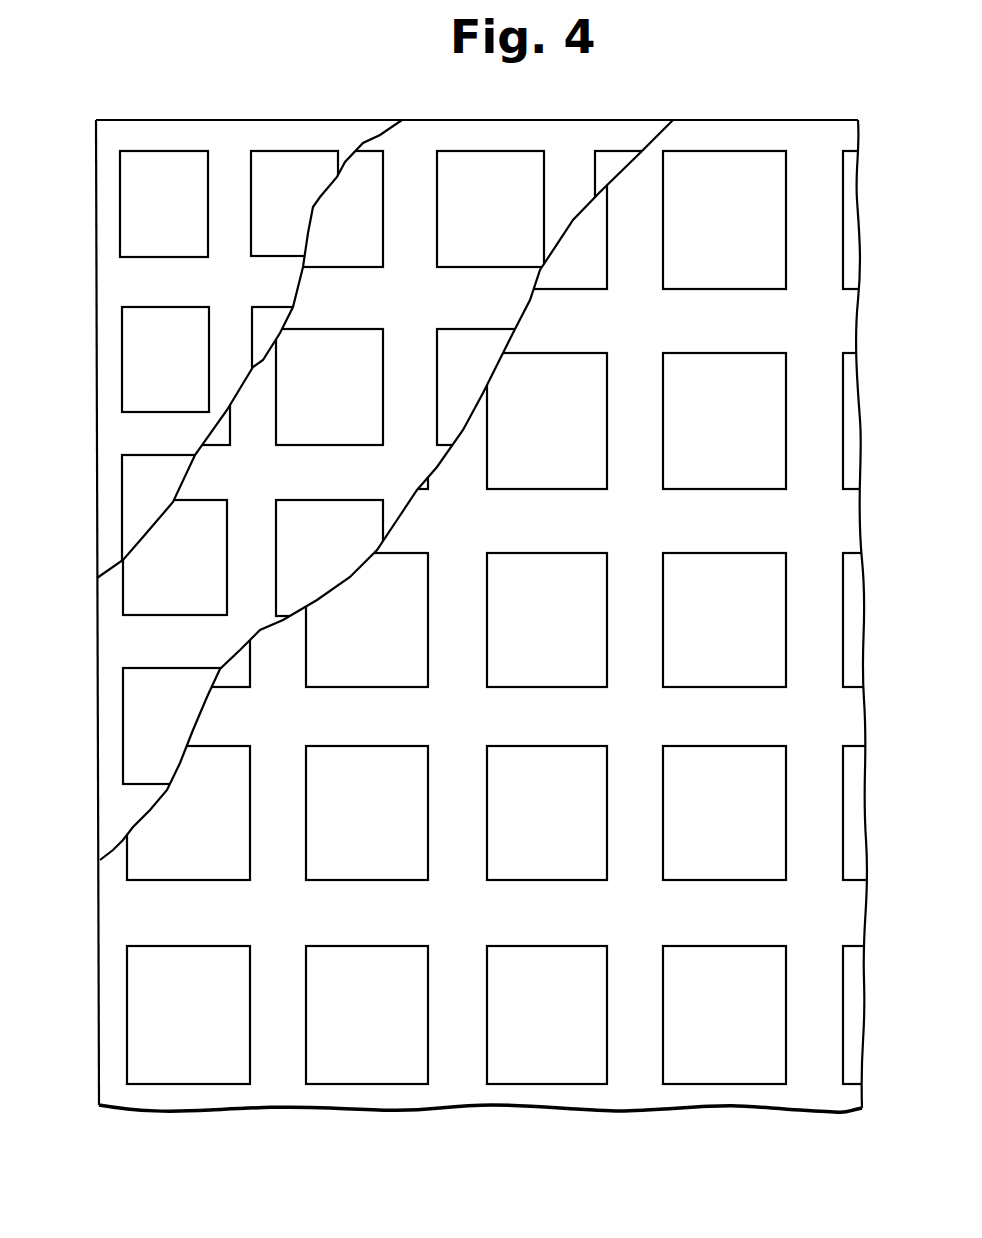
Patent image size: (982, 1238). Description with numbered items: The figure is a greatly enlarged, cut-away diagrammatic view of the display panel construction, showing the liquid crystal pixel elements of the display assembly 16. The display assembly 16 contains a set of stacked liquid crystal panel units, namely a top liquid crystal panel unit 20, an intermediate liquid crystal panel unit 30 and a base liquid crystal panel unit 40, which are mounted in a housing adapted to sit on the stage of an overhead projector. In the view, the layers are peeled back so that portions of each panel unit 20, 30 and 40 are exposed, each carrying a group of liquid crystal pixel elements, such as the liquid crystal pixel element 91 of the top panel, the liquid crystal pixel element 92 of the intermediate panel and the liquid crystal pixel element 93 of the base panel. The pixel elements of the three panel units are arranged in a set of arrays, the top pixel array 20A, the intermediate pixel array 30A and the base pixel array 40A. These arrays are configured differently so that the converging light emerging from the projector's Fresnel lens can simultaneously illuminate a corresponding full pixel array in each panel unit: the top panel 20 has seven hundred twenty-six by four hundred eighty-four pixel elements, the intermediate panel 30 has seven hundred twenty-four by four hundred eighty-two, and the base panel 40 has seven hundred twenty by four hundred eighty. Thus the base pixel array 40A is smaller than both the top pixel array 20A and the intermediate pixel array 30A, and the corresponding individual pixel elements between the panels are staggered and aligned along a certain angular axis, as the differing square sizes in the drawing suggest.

The display assembly 16 is at (730, 1122).
The top liquid crystal panel unit 20 is at (97, 362).
The intermediate liquid crystal panel unit 30 is at (98, 690).
The base liquid crystal panel unit 40 is at (98, 1050).
The top pixel array 20A is at (235, 172).
The intermediate pixel array 30A is at (573, 178).
The base pixel array 40A is at (808, 172).
The liquid crystal pixel element 91 is at (153, 217).
The liquid crystal pixel element 92 is at (157, 582).
The liquid crystal pixel element 93 is at (150, 857).